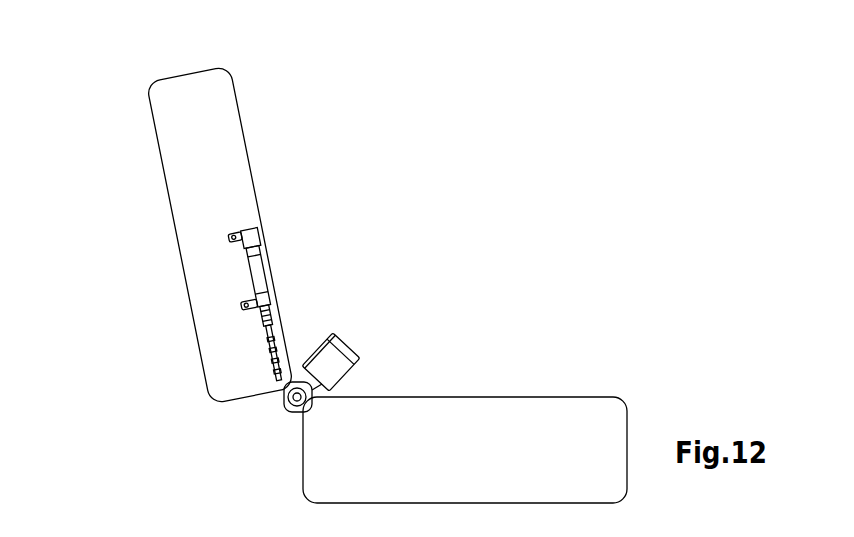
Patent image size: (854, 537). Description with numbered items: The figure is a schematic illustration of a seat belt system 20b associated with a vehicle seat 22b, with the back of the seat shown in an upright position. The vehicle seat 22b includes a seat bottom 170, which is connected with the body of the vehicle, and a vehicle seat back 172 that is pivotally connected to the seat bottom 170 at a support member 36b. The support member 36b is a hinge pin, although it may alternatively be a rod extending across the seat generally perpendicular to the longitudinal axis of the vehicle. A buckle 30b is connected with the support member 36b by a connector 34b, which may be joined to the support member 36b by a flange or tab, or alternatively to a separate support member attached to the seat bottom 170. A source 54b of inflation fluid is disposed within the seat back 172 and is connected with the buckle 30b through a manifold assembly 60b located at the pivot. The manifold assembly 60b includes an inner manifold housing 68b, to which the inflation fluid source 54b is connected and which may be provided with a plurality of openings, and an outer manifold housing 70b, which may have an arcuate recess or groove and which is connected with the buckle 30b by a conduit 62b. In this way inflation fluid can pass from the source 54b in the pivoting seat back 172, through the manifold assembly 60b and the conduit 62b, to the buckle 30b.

The vehicle seat back 172 is at (172, 214).
The seat bottom 170 is at (605, 425).
The source of inflation fluid 54b is at (256, 270).
The outer manifold housing 70b is at (299, 386).
The manifold assembly 60b is at (283, 405).
The buckle 30b is at (343, 366).
The vehicle seat 22b is at (358, 153).
The seat belt system 20b is at (401, 299).
The support member 36b is at (290, 408).
The inner manifold housing 68b is at (295, 412).
The connector 34b is at (306, 412).
The conduit 62b is at (310, 406).